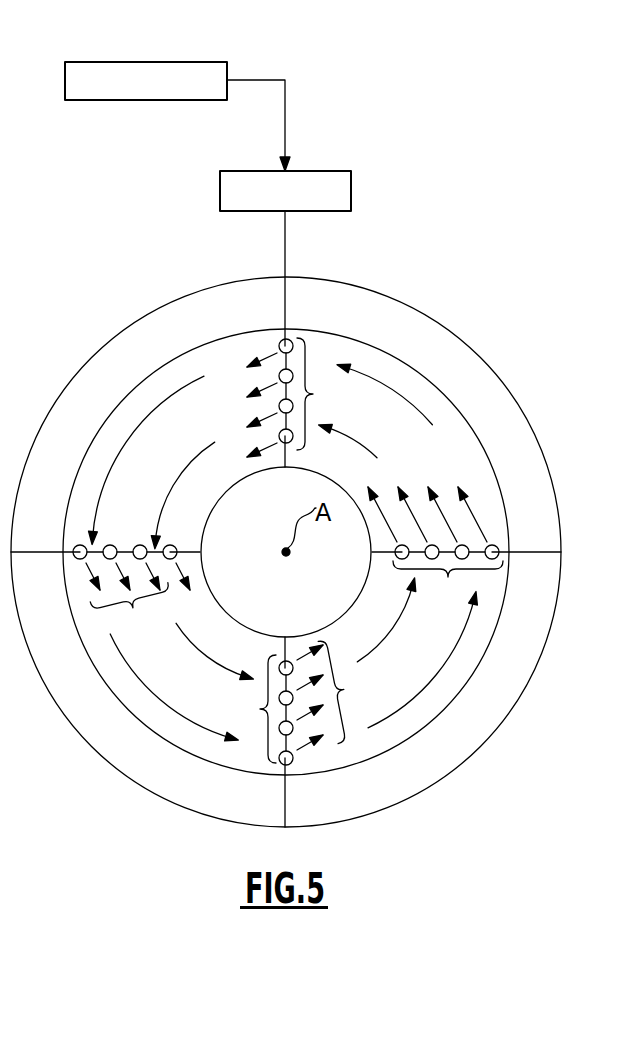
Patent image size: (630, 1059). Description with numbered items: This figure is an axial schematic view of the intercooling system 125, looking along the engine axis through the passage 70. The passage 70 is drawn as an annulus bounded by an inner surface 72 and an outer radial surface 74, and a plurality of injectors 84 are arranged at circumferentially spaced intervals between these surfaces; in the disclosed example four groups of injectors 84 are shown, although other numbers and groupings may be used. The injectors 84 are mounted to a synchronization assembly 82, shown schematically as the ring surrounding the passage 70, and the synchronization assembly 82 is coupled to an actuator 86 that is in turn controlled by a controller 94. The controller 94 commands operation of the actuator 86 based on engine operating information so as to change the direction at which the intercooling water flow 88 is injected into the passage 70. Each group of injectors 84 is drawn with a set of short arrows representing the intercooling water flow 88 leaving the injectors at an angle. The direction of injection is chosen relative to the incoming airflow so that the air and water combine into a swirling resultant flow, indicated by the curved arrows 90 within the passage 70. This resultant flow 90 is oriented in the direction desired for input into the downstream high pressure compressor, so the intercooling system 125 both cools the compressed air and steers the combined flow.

The controller 94 is at (136, 62).
The actuator 86 is at (352, 190).
The intercooling system 125 is at (515, 192).
The synchronization assembly 82 is at (400, 300).
The passage 70 is at (488, 424).
The inner surface 72 is at (210, 606).
The outer radial surface 74 is at (478, 451).
The resultant flow 90 is at (387, 383).
The injectors 84 is at (315, 397).
The intercooling water flow 88 is at (262, 342).